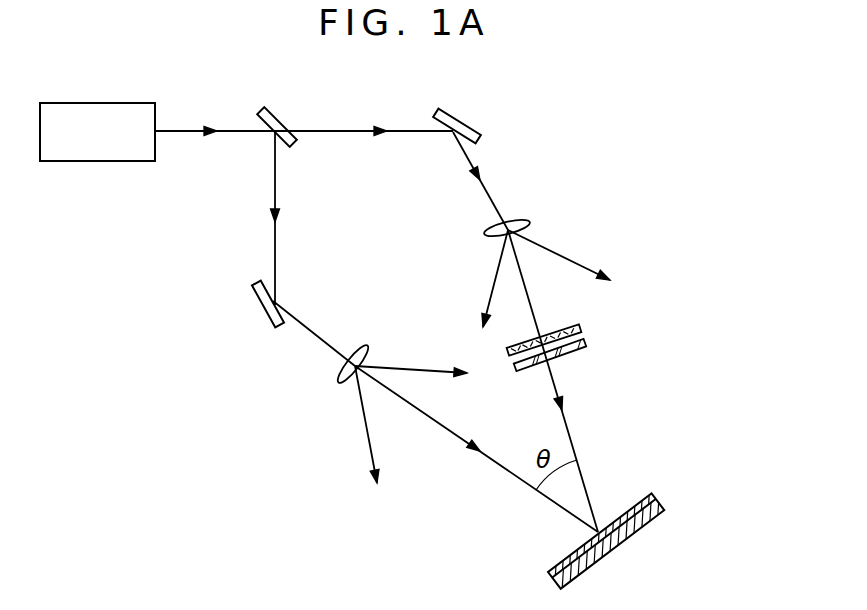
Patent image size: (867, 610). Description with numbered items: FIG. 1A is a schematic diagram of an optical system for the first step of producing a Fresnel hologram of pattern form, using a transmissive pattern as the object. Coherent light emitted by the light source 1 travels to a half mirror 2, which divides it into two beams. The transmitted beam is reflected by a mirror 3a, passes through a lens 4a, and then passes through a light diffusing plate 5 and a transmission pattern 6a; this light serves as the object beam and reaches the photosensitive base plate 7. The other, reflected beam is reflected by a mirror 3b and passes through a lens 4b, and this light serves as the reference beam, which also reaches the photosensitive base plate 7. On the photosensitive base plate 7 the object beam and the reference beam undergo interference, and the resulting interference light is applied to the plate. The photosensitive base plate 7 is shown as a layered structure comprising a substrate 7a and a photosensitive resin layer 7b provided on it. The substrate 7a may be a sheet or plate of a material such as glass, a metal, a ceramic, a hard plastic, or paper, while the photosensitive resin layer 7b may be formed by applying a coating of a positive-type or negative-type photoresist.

The light source 1 is at (100, 103).
The half mirror 2 is at (279, 125).
The mirror 3a is at (470, 123).
The mirror 3b is at (258, 298).
The lens 4a is at (518, 218).
The lens 4b is at (338, 378).
The light diffusing plate 5 is at (581, 327).
The mask 6a is at (586, 349).
The photosensitive base plate 7 is at (651, 521).
The substrate 7a is at (726, 462).
The photosensitive resin layer 7b is at (657, 495).